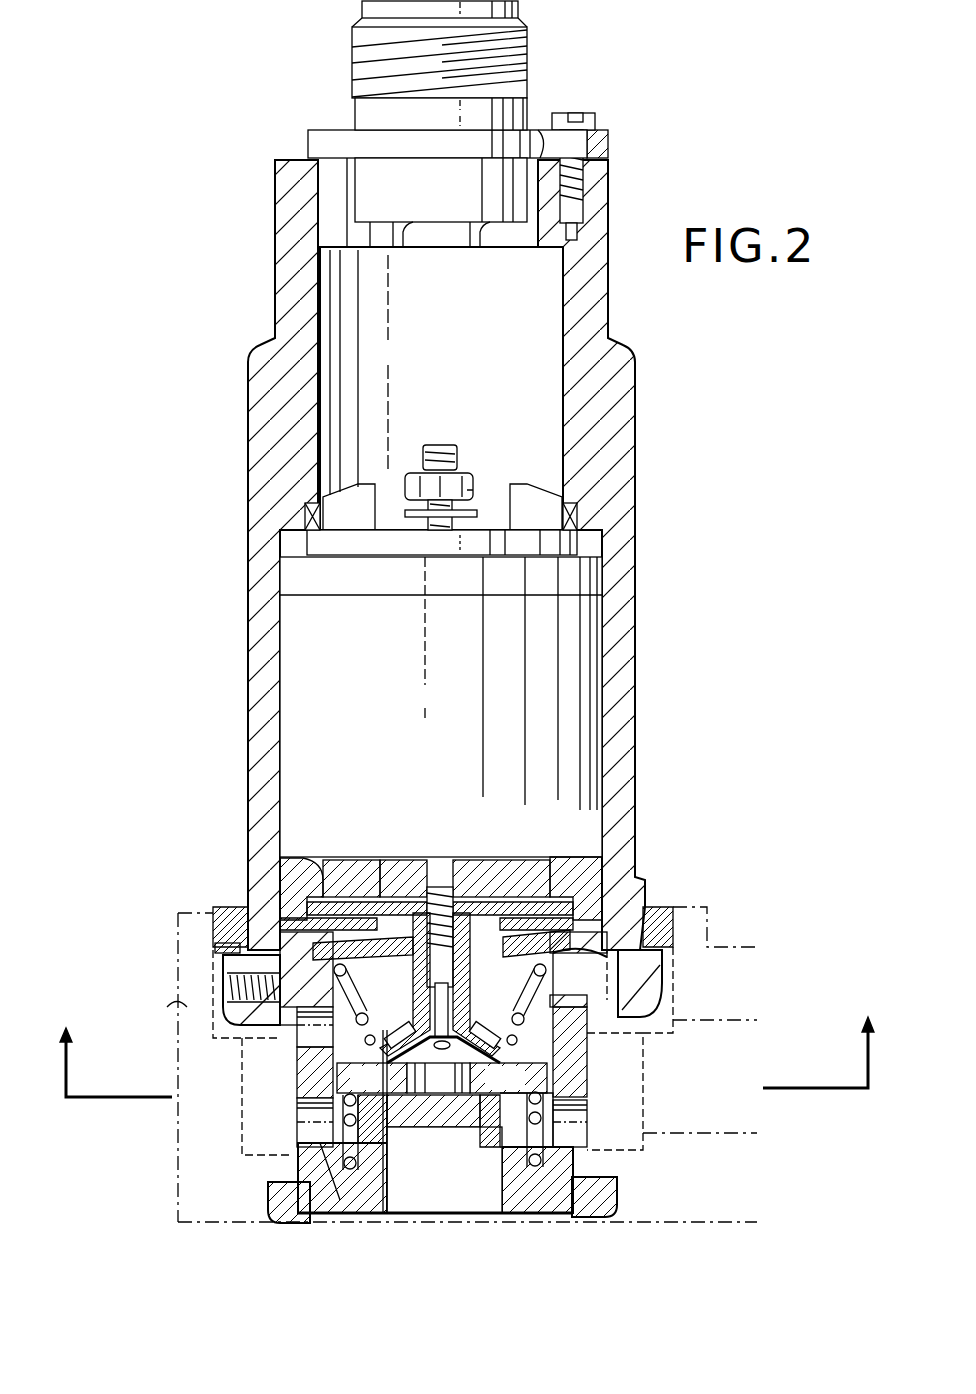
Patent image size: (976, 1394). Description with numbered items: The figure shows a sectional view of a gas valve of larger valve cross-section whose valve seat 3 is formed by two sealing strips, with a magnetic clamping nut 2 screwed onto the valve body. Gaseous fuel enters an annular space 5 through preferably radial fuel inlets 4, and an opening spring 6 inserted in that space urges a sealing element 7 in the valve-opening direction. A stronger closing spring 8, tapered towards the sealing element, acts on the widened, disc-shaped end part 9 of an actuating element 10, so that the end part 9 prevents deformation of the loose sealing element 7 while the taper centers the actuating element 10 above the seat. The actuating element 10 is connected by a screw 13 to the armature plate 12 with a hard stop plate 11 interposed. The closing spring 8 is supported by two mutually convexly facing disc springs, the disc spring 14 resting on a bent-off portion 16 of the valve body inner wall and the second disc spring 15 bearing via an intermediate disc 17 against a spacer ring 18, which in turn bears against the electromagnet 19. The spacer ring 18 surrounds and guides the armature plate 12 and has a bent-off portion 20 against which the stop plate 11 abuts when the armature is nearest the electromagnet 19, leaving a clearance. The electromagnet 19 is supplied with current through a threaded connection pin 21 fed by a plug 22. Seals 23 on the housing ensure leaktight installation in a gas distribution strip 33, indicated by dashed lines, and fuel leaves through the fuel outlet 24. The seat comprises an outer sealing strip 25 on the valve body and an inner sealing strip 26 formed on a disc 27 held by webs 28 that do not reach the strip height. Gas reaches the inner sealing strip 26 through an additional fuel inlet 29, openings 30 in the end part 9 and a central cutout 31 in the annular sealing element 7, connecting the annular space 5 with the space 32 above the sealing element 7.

The magnetic clamping nut 2 is at (612, 458).
The valve seat 3 is at (466, 1046).
The fuel inlets 4 is at (580, 1135).
The annular space 5 is at (388, 1180).
The opening spring 6 is at (345, 1165).
The sealing element 7 is at (550, 1080).
The closing spring 8 is at (595, 960).
The end part 9 is at (530, 1060).
The actuating element 10 is at (415, 1003).
The stop plate 11 is at (528, 862).
The armature plate 12 is at (404, 862).
The screw 13 is at (455, 865).
The disc spring 14 is at (616, 968).
The second disc spring 15 is at (590, 925).
The bent-off portion 16 is at (330, 960).
The intermediate disc 17 is at (592, 862).
The spacer ring 18 is at (306, 860).
The electromagnet 19 is at (293, 610).
The bent-off portion 20 is at (358, 862).
The threaded connection pin 21 is at (460, 476).
The plug 22 is at (527, 43).
The seals 23 is at (228, 908).
The fuel outlet 24 is at (480, 1215).
The outer sealing strip 25 is at (410, 1127).
The inner sealing strip 26 is at (462, 1085).
The disc 27 is at (448, 1127).
The webs 28 is at (498, 1127).
The additional fuel inlet 29 is at (300, 1055).
The openings 30 is at (400, 1063).
The central cutout 31 is at (443, 1080).
The space 32 is at (505, 987).
The gas distribution strip 33 is at (162, 1014).